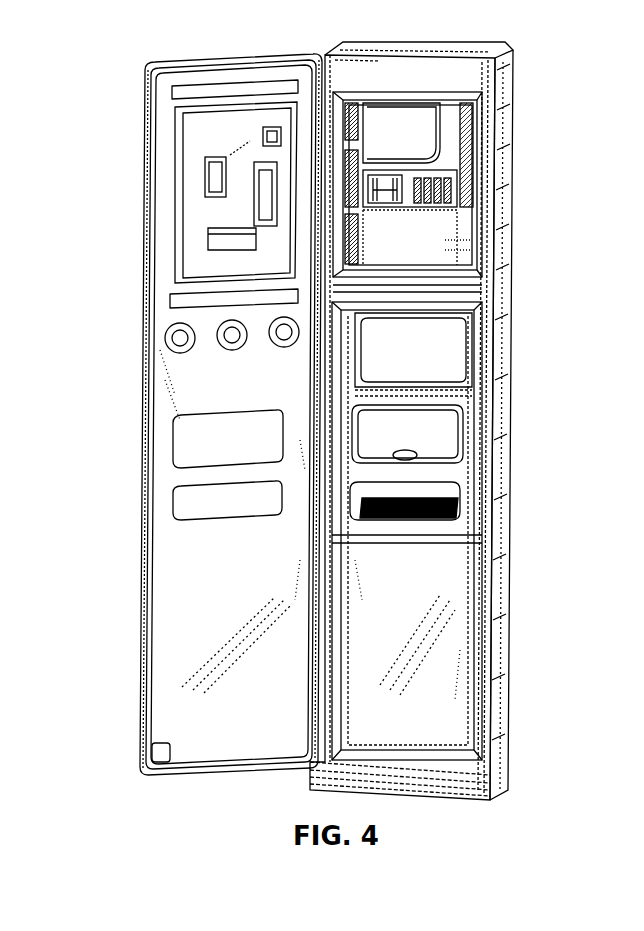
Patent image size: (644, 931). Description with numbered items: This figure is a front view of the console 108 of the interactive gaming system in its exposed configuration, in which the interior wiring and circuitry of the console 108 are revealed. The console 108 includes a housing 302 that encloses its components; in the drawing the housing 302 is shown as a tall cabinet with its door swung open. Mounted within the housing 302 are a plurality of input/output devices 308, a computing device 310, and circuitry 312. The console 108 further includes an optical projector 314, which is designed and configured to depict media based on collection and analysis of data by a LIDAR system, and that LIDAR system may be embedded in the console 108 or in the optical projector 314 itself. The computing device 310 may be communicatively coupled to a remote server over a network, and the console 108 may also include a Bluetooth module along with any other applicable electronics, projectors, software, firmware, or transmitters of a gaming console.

The console 108 is at (471, 421).
The housing 302 is at (478, 288).
The optical projector 314 is at (418, 168).
The computing device 310 is at (452, 370).
The input/output devices 308 is at (450, 518).
The circuitry 312 is at (223, 240).